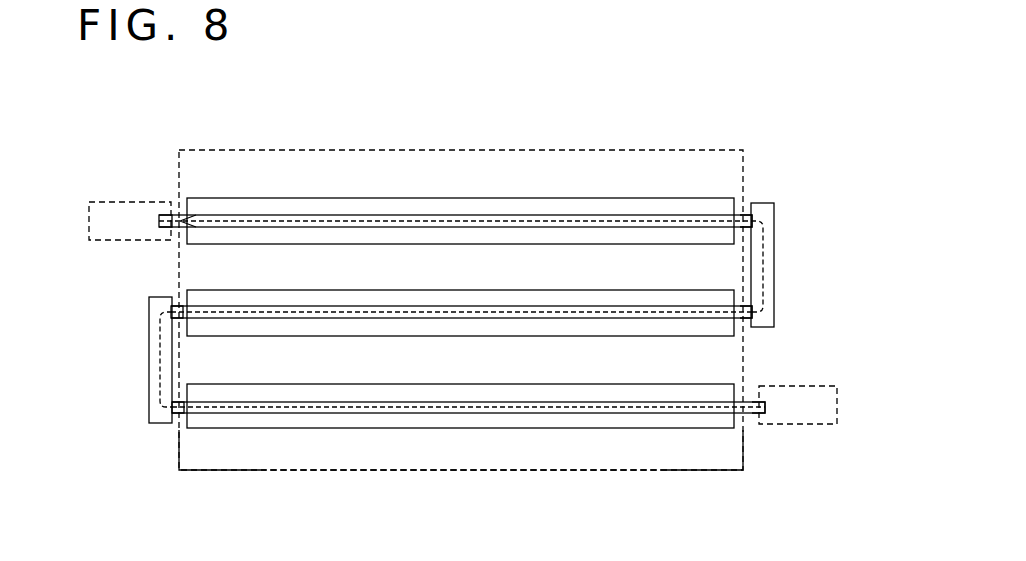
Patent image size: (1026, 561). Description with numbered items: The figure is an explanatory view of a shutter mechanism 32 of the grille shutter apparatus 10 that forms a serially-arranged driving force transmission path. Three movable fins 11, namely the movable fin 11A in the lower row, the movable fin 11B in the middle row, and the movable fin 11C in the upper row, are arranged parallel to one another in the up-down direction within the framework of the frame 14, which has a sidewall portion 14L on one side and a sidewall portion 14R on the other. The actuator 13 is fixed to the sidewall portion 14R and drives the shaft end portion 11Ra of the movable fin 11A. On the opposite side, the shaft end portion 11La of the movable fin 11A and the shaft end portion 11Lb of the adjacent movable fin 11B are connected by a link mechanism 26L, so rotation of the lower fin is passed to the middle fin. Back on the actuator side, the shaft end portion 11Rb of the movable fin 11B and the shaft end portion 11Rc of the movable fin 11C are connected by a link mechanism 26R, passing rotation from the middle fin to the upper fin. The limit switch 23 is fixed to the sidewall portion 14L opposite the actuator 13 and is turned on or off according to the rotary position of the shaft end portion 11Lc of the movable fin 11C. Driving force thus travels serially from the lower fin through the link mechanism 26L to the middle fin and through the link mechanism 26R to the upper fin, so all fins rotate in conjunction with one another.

The grille shutter apparatus 10 is at (184, 120).
The frame 14 is at (558, 150).
The sidewall portion 14L is at (183, 447).
The sidewall portion 14R is at (742, 446).
The movable fins 11 is at (462, 298).
The movable fin 11A is at (388, 384).
The movable fin 11B is at (388, 290).
The movable fin 11C is at (388, 198).
The shaft end portion 11La is at (172, 415).
The shaft end portion 11Lb is at (172, 304).
The shaft end portion 11Lc is at (172, 212).
The shaft end portion 11Ra is at (748, 418).
The shaft end portion 11Rb is at (750, 328).
The shaft end portion 11Rc is at (752, 212).
The limit switch 23 is at (89, 223).
The link mechanism 26L is at (149, 357).
The link mechanism 26R is at (776, 268).
The actuator 13 is at (840, 405).
The shutter mechanism 32 is at (410, 448).